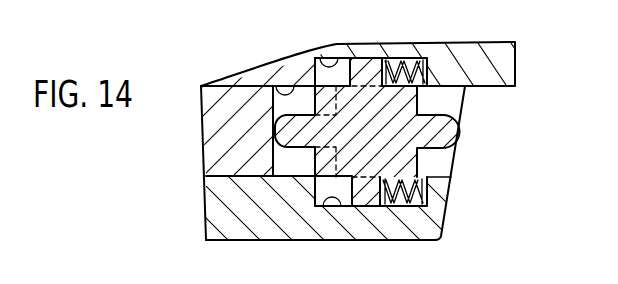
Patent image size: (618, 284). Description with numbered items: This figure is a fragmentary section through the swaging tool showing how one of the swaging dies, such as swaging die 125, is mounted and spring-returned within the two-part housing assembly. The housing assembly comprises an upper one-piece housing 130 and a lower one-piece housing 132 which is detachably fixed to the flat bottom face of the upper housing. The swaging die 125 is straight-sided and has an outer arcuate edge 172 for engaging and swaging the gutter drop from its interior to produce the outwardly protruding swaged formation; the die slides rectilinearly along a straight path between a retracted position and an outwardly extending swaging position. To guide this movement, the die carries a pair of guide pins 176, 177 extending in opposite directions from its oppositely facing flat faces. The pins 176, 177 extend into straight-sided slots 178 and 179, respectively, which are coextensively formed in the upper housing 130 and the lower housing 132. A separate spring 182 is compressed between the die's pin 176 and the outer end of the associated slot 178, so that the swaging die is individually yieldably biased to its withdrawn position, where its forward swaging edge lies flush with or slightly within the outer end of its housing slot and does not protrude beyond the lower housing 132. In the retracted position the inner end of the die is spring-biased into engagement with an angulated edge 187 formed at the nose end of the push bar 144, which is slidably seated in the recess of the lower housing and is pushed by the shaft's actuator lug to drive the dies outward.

The swaging die 125 is at (448, 162).
The upper one-piece housing 130 is at (518, 66).
The lower one-piece housing 132 is at (447, 229).
The push bar member 144 is at (203, 129).
The outer arcuate edge 172 is at (458, 118).
The guide pin 176 is at (357, 58).
The guide pin 177 is at (365, 200).
The pin-receiving slot 178 is at (321, 58).
The pin-receiving slot 179 is at (316, 208).
The spring 182 is at (400, 58).
The angulated edge 187 is at (287, 86).